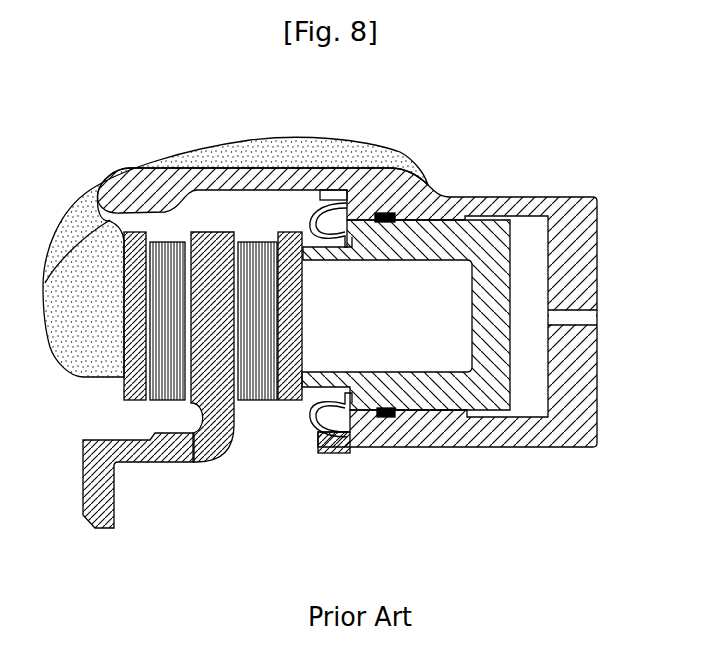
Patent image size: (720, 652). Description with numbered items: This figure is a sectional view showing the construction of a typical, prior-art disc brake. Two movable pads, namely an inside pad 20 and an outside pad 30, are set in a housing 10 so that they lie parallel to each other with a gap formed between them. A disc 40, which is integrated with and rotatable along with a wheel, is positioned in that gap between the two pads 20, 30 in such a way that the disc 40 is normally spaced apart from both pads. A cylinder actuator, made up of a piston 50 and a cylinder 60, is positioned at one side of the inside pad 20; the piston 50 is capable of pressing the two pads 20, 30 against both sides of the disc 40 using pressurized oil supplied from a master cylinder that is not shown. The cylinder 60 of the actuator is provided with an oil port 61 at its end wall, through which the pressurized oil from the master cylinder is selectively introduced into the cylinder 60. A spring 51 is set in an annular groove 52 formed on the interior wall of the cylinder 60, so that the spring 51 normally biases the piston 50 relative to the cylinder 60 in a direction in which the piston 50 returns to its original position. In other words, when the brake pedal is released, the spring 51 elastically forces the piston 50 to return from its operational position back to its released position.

The housing 10 is at (290, 137).
The inside pad 20 is at (255, 402).
The outside pad 30 is at (165, 402).
The disc 40 is at (110, 507).
The piston 50 is at (500, 407).
The spring 51 is at (396, 418).
The annular groove 52 is at (380, 417).
The cylinder 60 is at (428, 185).
The oil port 61 is at (582, 317).